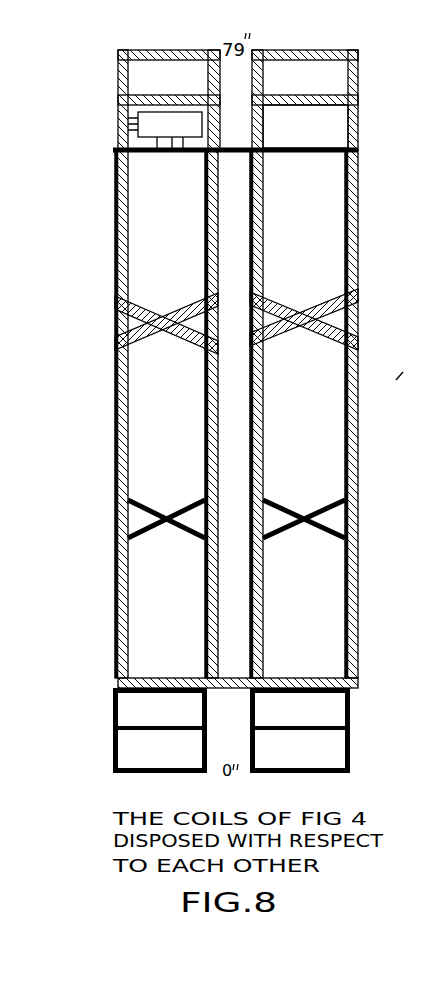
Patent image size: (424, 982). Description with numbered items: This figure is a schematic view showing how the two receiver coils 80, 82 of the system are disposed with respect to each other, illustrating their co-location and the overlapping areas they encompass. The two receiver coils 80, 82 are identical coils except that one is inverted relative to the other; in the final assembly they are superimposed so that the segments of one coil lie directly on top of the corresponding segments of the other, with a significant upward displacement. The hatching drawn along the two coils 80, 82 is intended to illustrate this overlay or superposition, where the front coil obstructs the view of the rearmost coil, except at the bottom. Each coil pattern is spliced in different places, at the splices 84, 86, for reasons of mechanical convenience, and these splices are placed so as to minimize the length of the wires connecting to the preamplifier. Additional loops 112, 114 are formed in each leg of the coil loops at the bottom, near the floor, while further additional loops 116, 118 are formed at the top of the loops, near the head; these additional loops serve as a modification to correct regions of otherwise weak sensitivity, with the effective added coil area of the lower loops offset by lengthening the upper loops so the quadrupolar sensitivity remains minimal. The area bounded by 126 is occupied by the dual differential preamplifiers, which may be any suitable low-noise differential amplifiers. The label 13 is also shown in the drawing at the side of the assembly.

The additional loop 116 is at (128, 86).
The additional loop 118 is at (348, 95).
The receiver coil 82 is at (357, 120).
The bounded area 126 is at (157, 112).
The splice 86 is at (128, 124).
The splice 84 is at (152, 152).
The receiver coil 80 is at (352, 170).
The additional loop 112 is at (128, 729).
The additional loop 114 is at (335, 722).
The coil assembly 13 is at (410, 375).